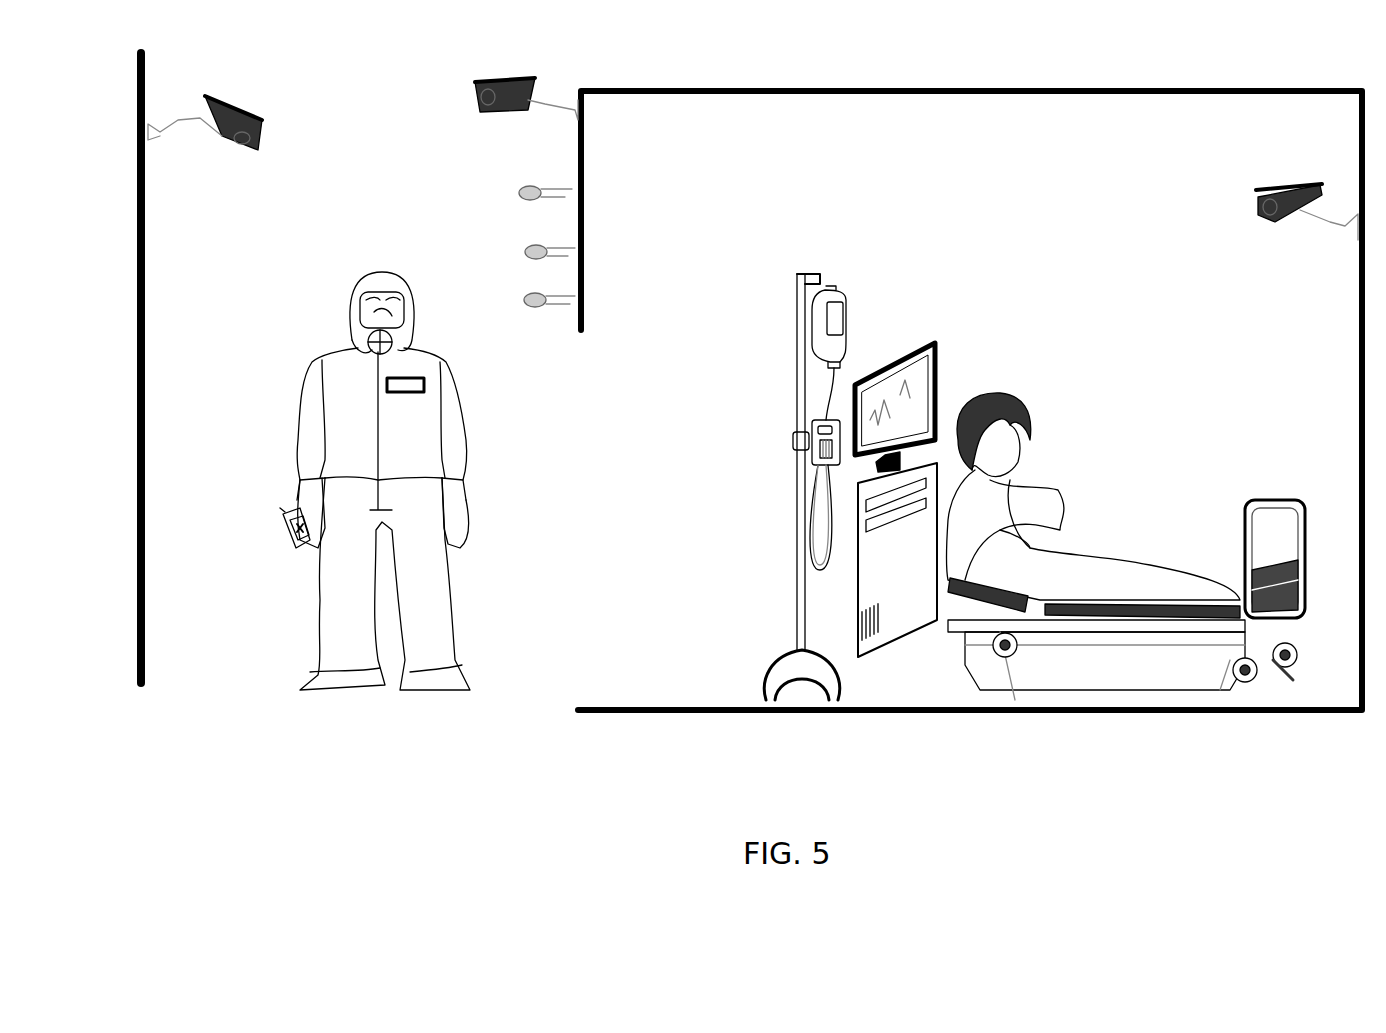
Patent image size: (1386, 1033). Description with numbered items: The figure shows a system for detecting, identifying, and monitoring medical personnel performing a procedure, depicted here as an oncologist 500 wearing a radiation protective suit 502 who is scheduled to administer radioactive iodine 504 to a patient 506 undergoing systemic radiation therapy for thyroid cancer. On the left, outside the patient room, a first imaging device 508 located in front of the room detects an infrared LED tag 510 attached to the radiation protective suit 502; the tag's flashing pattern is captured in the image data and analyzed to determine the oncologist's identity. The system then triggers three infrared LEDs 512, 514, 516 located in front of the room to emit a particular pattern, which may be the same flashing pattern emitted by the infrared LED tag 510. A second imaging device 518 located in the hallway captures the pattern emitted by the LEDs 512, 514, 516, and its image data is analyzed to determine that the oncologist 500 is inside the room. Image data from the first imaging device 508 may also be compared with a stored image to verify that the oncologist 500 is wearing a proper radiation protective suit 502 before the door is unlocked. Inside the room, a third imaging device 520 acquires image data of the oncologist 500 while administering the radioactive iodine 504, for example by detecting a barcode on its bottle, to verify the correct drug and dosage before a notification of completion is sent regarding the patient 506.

The oncologist 500 is at (372, 272).
The radiation protective suit 502 is at (280, 432).
The radioactive iodine 504 is at (280, 515).
The patient 506 is at (1028, 400).
The first imaging device 508 is at (490, 78).
The infrared LED tag 510 is at (418, 378).
The infrared LED 512 is at (537, 188).
The infrared LED 514 is at (545, 250).
The infrared LED 516 is at (548, 298).
The second imaging device 518 is at (218, 96).
The third imaging device 520 is at (1290, 185).